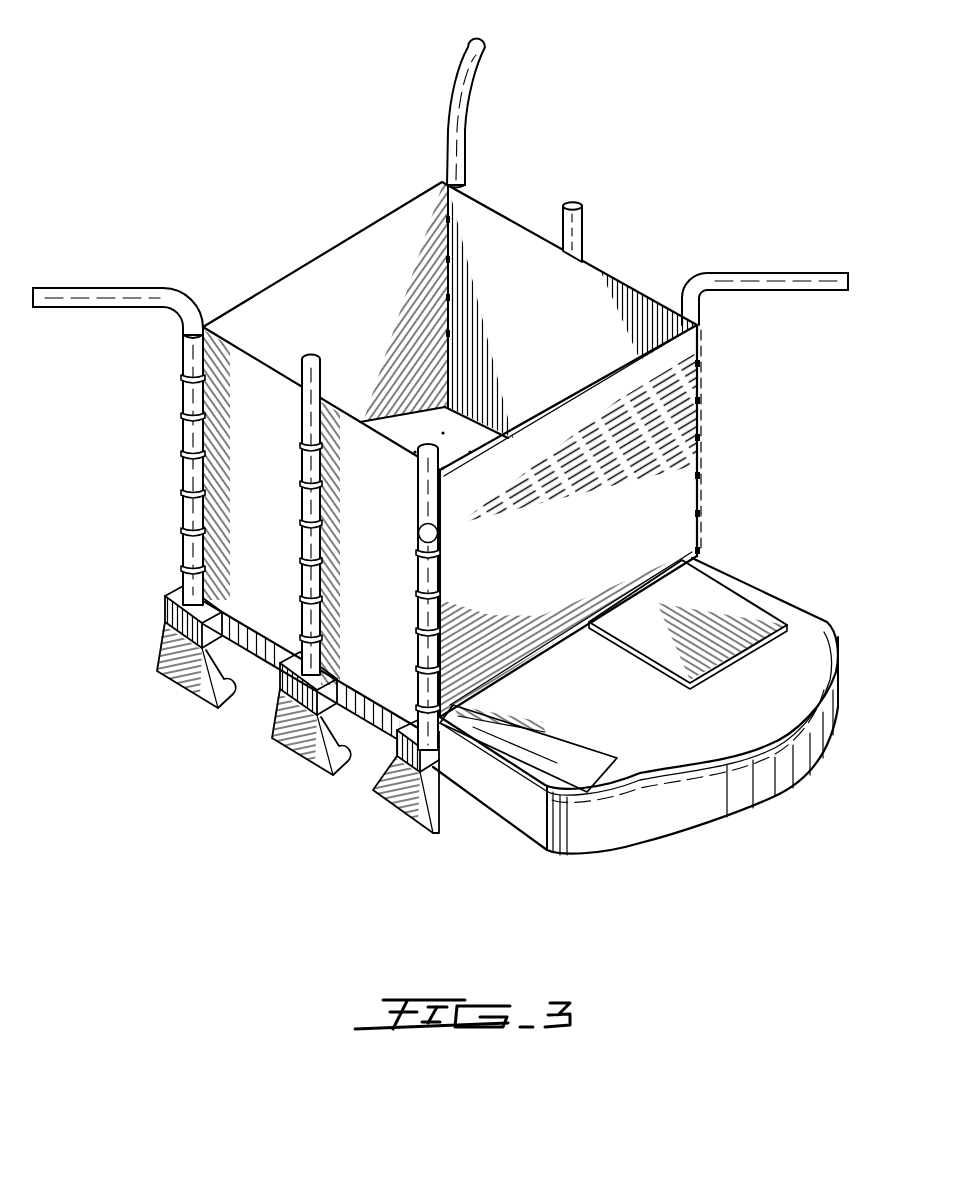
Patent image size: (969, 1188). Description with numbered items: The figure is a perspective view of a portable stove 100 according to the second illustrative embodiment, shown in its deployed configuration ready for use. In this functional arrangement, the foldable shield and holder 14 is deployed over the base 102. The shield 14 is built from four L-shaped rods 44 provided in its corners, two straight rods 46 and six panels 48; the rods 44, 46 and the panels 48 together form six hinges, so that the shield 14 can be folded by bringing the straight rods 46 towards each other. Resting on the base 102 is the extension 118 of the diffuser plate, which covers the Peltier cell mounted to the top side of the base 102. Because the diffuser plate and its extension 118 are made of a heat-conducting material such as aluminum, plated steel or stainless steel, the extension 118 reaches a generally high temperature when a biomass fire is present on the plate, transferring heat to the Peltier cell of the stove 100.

The foldable shield and holder 14 is at (629, 276).
The L-shaped rod 44 is at (786, 280).
The straight rod 46 is at (571, 203).
The panel 48 is at (517, 260).
The portable stove 100 is at (454, 507).
The base 102 is at (807, 633).
The extension 118 is at (733, 605).